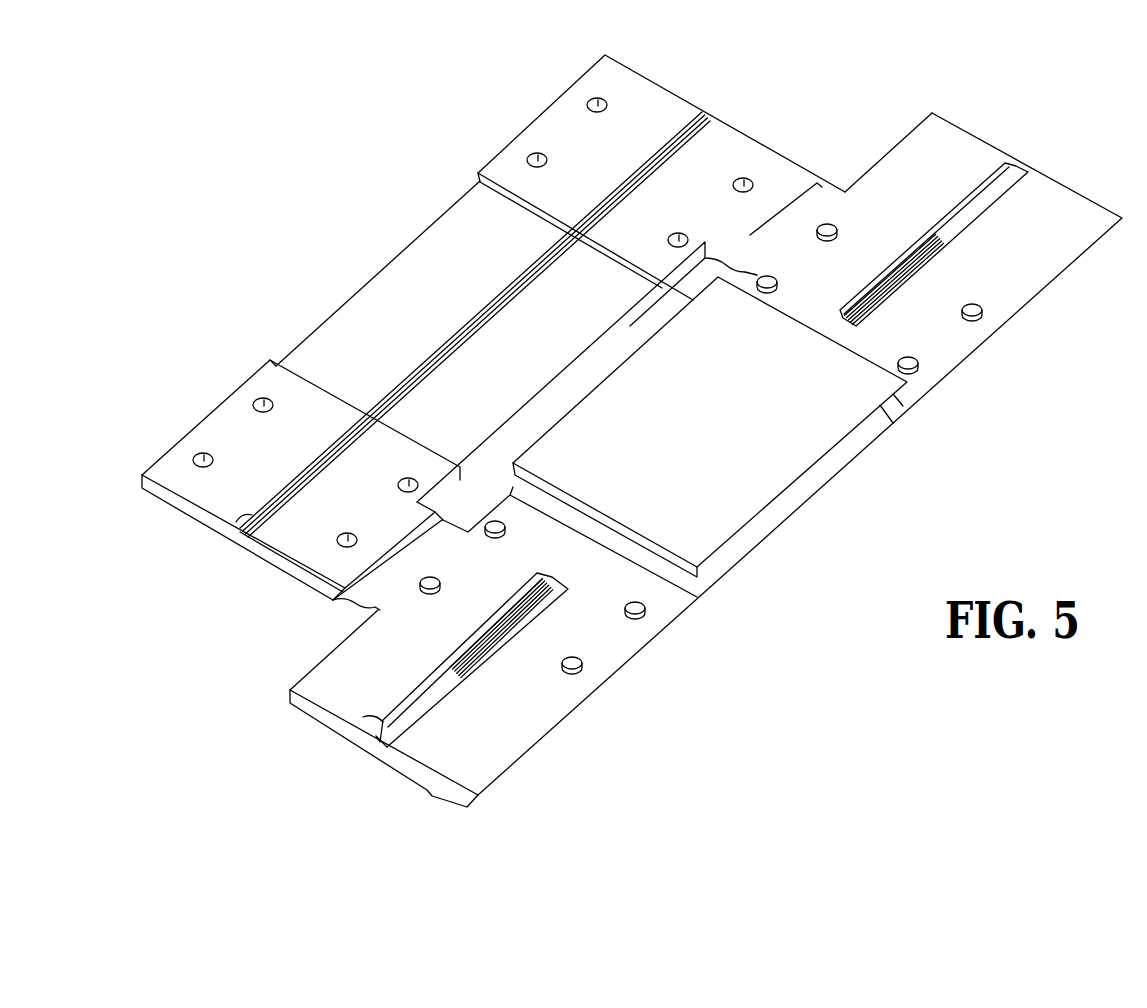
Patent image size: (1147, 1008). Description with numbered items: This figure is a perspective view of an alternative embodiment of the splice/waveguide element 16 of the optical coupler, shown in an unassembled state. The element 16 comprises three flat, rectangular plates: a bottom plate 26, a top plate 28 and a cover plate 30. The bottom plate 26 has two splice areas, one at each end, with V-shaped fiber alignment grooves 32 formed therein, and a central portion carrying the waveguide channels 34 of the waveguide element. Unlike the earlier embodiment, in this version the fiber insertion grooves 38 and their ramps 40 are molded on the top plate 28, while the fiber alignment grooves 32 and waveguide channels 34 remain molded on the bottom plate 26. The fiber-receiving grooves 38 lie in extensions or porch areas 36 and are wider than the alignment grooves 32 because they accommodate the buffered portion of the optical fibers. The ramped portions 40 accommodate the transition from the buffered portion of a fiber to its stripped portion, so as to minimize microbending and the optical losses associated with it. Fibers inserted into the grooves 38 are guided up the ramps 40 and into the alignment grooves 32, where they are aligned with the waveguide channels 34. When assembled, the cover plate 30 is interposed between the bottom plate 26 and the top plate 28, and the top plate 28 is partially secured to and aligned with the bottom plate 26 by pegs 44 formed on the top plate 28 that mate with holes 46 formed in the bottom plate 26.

The splice/waveguide element 16 is at (248, 148).
The bottom plate 26 is at (453, 200).
The top plate 28 is at (1072, 186).
The cover plate 30 is at (696, 455).
The fiber alignment grooves 32 is at (687, 128).
The waveguide channels 34 is at (409, 380).
The porch areas 36 is at (1055, 263).
The fiber-receiving grooves 38 is at (985, 190).
The ramped portions 40 is at (890, 270).
The pegs 44 is at (583, 668).
The holes 46 is at (203, 455).